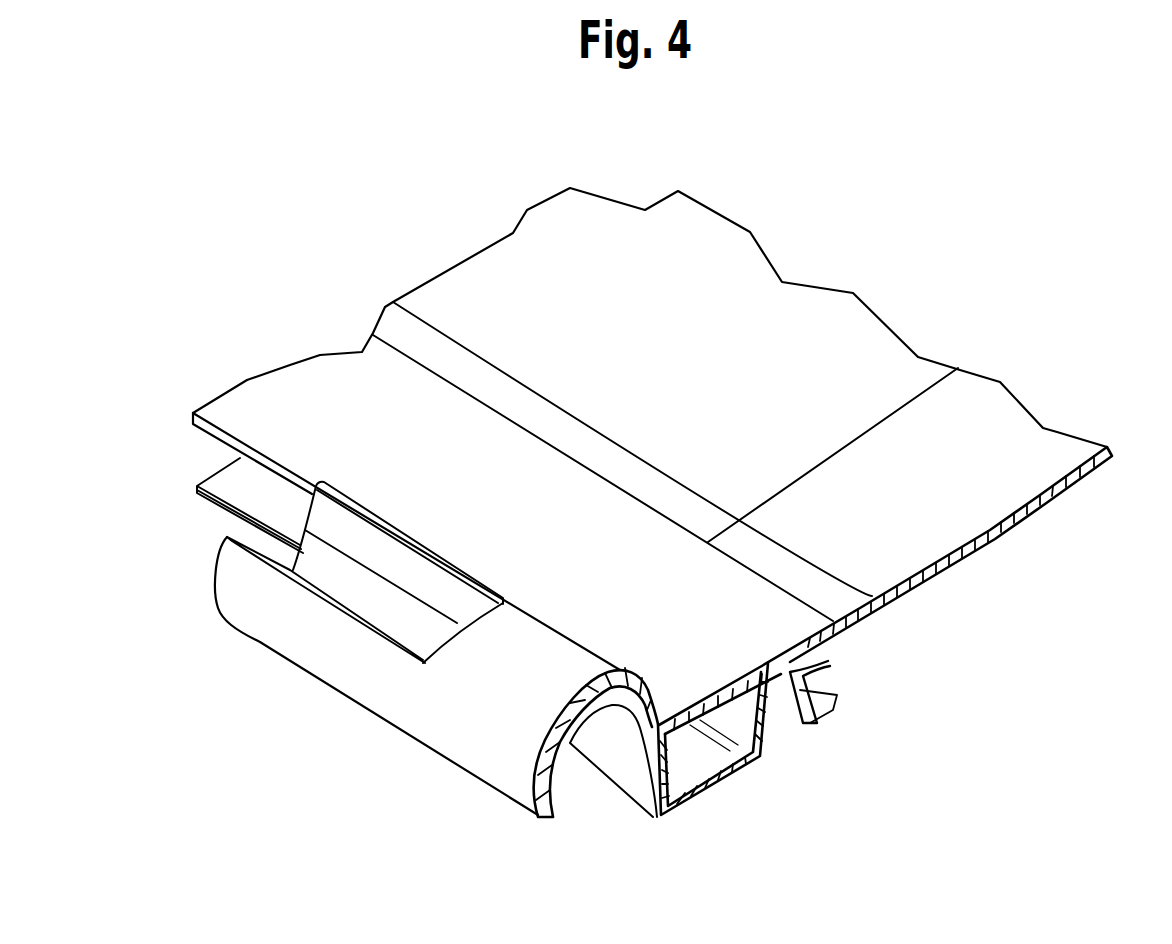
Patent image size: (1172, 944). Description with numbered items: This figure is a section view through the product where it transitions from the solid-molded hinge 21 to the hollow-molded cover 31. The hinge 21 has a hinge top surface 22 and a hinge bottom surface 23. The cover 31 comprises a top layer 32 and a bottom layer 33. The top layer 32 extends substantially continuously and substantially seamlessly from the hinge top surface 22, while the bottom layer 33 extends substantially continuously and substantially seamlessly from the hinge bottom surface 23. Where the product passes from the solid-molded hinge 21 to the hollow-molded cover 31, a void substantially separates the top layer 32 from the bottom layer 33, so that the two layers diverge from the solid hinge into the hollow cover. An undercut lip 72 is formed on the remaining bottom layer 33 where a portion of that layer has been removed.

The solid-molded hinge 21 is at (312, 672).
The hinge top surface 22 is at (540, 722).
The hinge bottom surface 23 is at (572, 745).
The cover 31 is at (832, 303).
The top layer 32 is at (1060, 477).
The bottom layer 33 is at (787, 697).
The undercut lip 72 is at (838, 703).